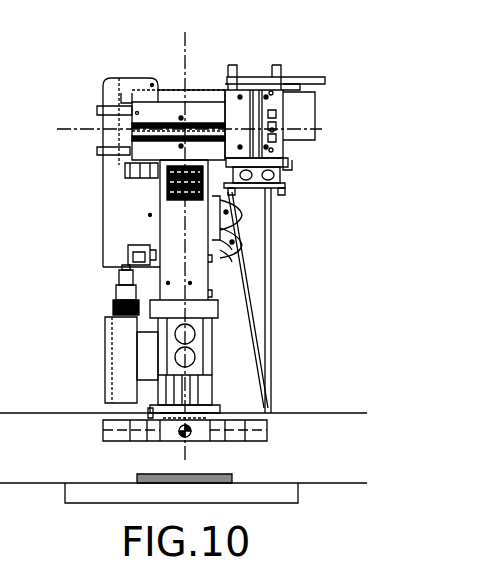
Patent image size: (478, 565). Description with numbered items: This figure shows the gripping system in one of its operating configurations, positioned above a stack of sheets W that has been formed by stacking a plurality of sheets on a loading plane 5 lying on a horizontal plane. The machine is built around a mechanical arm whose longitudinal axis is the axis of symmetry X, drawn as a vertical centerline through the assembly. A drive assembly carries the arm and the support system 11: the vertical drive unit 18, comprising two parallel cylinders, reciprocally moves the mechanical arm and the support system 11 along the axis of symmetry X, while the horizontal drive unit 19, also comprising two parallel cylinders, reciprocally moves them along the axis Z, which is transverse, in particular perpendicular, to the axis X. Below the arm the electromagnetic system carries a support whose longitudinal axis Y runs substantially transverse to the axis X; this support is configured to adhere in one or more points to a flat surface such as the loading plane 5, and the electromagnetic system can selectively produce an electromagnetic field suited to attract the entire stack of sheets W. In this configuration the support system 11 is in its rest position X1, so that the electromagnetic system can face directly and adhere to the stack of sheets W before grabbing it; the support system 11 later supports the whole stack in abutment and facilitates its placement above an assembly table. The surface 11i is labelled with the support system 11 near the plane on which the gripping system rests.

The loading plane 5 is at (68, 495).
The support system 11 is at (326, 483).
The stage surface 11i is at (325, 413).
The vertical drive unit 18 is at (275, 112).
The horizontal drive unit 19 is at (148, 115).
The stack of sheets W is at (238, 474).
The axis of symmetry X is at (186, 48).
The rest position X1 is at (297, 373).
The longitudinal axis Y is at (185, 437).
The axis Z is at (343, 129).